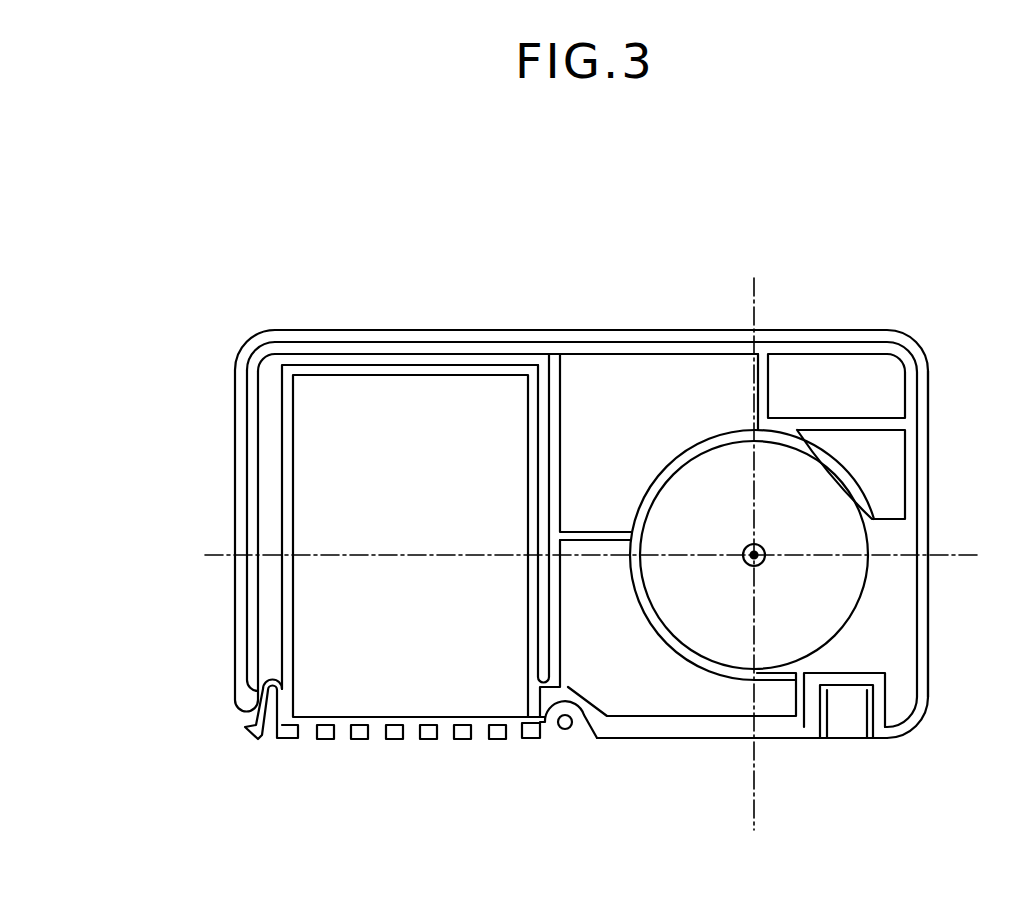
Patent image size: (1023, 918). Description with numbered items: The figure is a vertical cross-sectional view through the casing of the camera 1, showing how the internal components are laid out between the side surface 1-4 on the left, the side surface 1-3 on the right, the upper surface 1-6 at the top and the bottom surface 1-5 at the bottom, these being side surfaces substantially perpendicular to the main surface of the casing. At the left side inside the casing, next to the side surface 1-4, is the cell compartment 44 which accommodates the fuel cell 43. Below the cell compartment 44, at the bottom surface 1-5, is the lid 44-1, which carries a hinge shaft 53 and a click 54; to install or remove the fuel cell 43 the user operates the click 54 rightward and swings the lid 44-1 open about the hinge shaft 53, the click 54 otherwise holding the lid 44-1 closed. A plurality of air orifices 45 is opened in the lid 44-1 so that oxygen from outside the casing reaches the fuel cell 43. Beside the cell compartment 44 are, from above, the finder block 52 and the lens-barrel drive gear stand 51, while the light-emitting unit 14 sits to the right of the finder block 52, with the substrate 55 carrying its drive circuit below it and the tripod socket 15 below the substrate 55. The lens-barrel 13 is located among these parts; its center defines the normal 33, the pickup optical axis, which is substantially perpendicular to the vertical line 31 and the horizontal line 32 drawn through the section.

The camera 1 is at (795, 226).
The side surface 1-3 is at (929, 486).
The side surface 1-4 is at (233, 450).
The bottom surface 1-5 is at (654, 740).
The upper surface 1-6 is at (528, 330).
The lens-barrel 13 is at (860, 629).
The light-emitting unit 14 is at (850, 377).
The tripod socket 15 is at (873, 741).
The vertical line 31 is at (754, 538).
The horizontal line 32 is at (609, 557).
The normal 33 is at (767, 560).
The fuel cell 43 is at (440, 405).
The cell compartment 44 is at (325, 365).
The lid 44-1 is at (535, 741).
The air orifices 45 is at (305, 741).
The lens-barrel drive gear stand 51 is at (698, 703).
The finder block 52 is at (635, 377).
The hinge shaft 53 is at (570, 729).
The click 54 is at (255, 738).
The substrate 55 is at (893, 466).